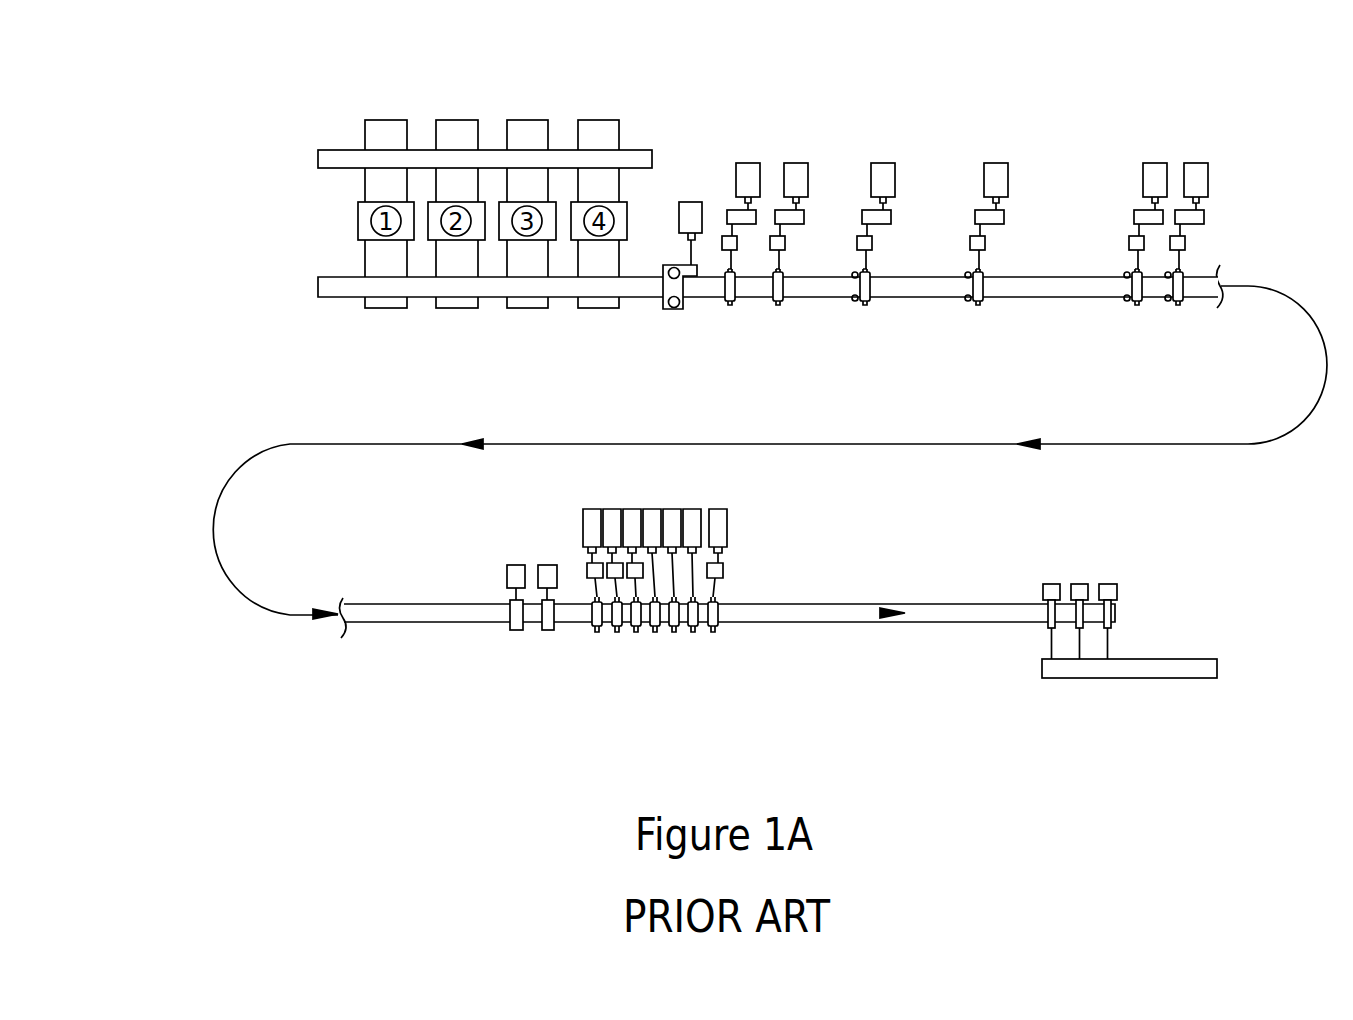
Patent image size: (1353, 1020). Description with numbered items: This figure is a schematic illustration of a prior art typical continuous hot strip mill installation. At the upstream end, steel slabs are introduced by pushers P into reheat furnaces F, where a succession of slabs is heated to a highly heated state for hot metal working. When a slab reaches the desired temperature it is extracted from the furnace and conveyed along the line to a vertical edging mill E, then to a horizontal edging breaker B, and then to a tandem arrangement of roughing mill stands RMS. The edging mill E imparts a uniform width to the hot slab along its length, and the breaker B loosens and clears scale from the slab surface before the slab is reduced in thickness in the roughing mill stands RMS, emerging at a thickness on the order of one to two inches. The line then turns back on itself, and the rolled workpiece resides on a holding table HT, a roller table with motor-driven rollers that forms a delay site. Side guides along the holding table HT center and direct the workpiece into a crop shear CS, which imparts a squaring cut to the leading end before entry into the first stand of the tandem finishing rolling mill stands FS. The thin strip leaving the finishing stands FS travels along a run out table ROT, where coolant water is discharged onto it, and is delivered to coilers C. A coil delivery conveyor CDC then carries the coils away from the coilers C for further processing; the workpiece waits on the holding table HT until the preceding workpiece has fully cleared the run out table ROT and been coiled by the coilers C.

The reheat furnaces F is at (333, 150).
The pushers P is at (620, 120).
The vertical edging mill E is at (672, 310).
The horizontal edging breaker B is at (733, 304).
The roughing mill stands RMS is at (773, 325).
The holding table HT is at (382, 623).
The crop shear CS is at (520, 630).
The finishing rolling mill stands FS is at (723, 647).
The run out table ROT is at (795, 623).
The coilers C is at (1126, 572).
The coil delivery conveyor CDC is at (1167, 659).